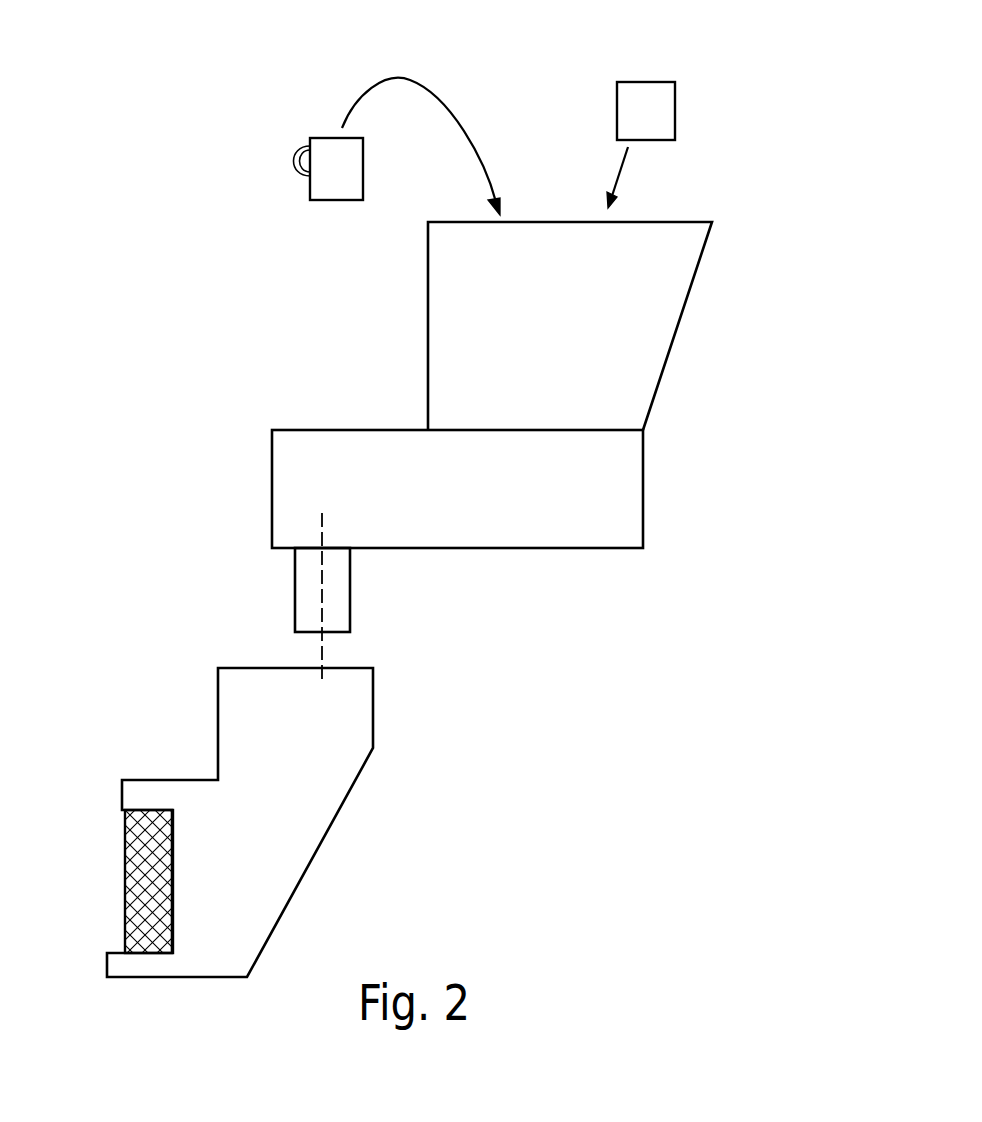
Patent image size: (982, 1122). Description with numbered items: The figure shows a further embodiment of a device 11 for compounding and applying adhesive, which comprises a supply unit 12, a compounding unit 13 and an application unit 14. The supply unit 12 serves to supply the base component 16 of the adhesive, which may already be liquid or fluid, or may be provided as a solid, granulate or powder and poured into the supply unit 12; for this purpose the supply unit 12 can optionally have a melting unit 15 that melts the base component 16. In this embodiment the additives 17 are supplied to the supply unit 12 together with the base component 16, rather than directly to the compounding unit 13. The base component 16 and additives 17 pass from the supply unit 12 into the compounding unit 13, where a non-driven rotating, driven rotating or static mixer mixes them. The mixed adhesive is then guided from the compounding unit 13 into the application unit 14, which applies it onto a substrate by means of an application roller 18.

The device 11 is at (170, 402).
The supply unit 12 is at (664, 287).
The compounding unit 13 is at (342, 580).
The application unit 14 is at (324, 812).
The melting unit 15 is at (635, 480).
The base component 16 is at (637, 89).
The additives 17 is at (320, 145).
The application roller 18 is at (127, 858).